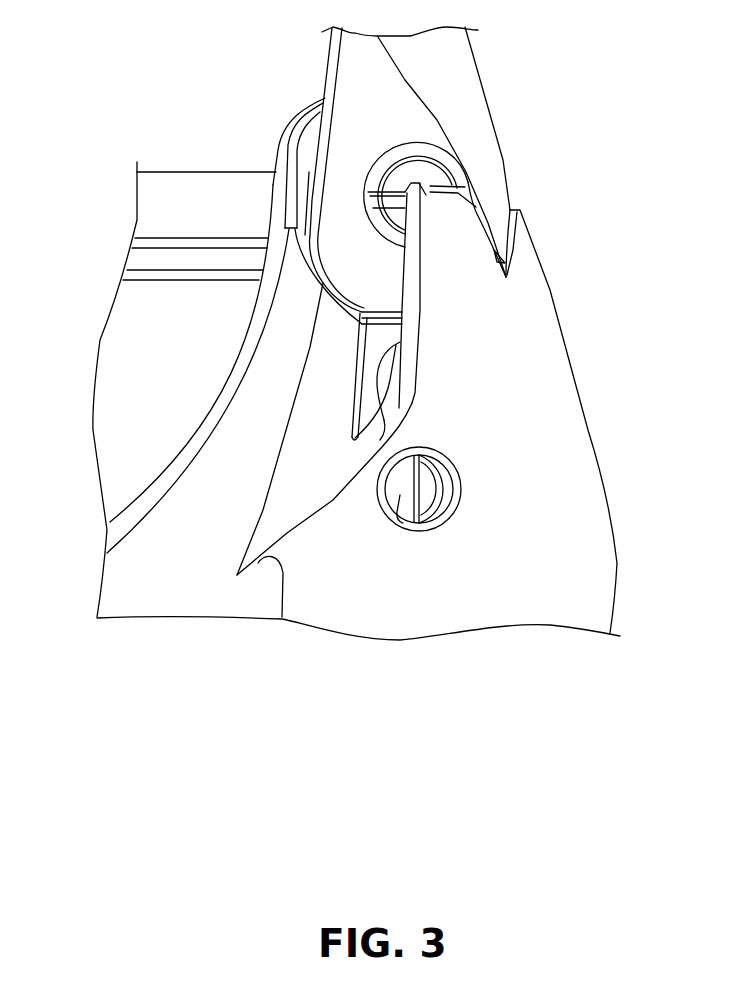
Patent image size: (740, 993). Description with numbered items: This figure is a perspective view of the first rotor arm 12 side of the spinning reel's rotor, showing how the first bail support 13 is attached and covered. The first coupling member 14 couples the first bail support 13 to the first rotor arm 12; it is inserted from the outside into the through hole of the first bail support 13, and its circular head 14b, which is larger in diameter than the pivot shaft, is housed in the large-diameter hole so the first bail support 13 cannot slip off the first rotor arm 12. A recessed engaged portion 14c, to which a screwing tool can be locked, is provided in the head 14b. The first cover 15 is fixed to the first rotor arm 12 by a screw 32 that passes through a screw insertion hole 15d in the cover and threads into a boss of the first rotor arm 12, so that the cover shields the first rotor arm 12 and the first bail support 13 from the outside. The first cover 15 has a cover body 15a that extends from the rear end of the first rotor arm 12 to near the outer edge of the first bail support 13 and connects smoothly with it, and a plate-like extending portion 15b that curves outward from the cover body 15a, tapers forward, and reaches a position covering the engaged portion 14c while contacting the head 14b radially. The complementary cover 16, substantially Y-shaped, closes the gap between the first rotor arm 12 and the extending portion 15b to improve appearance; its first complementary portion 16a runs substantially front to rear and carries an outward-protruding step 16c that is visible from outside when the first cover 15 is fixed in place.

The first rotor arm 12 is at (193, 432).
The first bail support 13 is at (496, 104).
The first coupling member 14 is at (465, 173).
The head 14b is at (327, 98).
The engaged portion 14c is at (368, 193).
The first cover 15 is at (528, 596).
The cover body 15a is at (321, 405).
The extending portion 15b is at (472, 310).
The screw insertion hole 15d is at (458, 492).
The complementary cover 16 is at (362, 367).
The first complementary portion 16a is at (371, 383).
The step 16c is at (380, 408).
The screw 32 is at (392, 520).